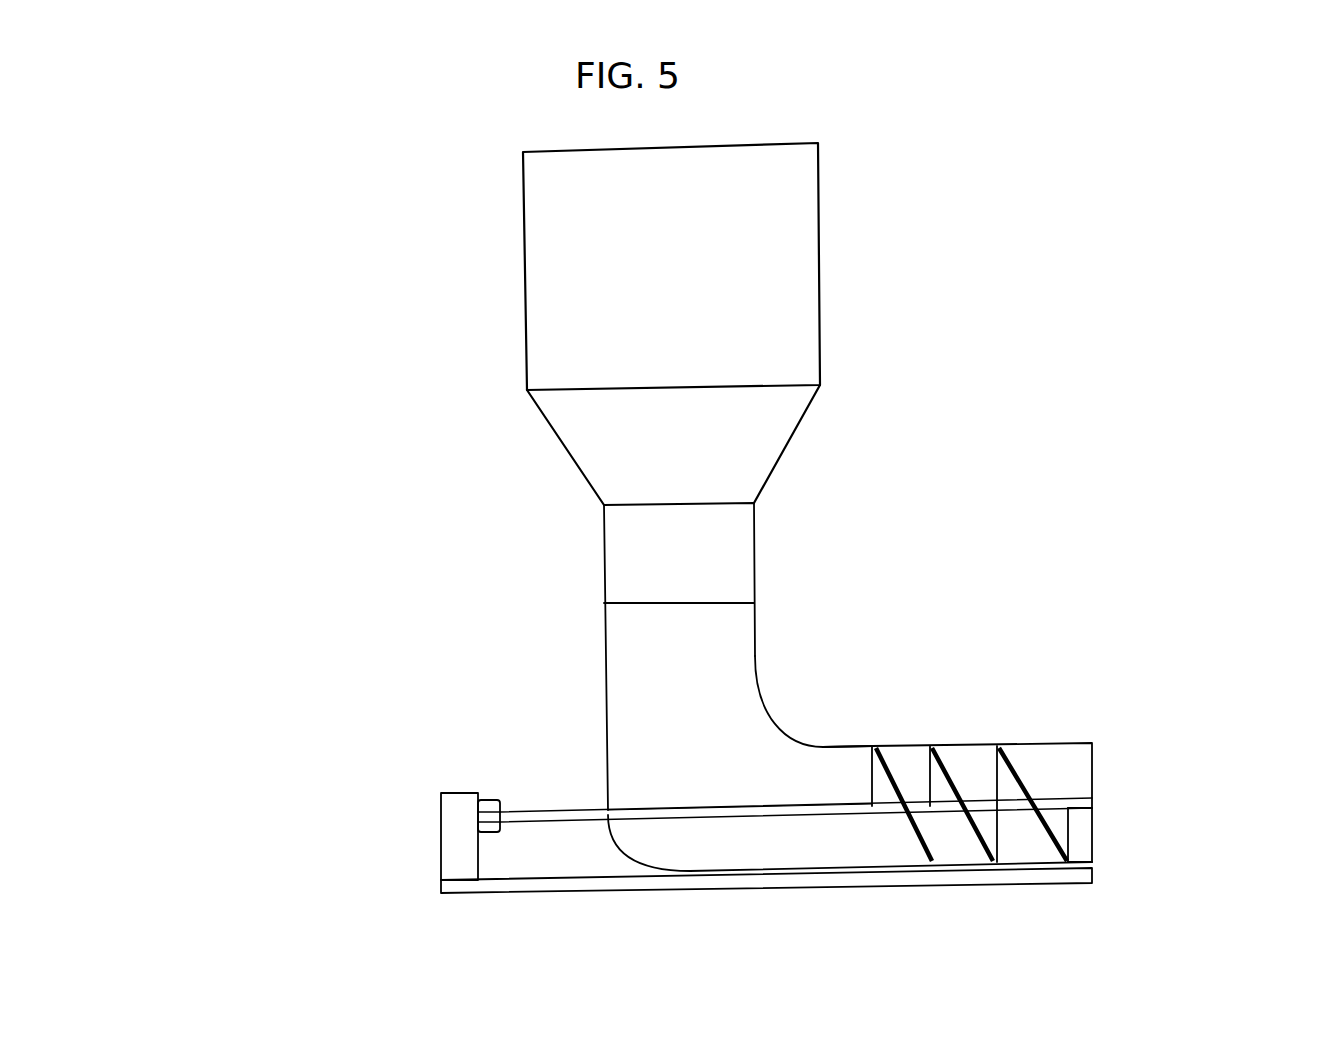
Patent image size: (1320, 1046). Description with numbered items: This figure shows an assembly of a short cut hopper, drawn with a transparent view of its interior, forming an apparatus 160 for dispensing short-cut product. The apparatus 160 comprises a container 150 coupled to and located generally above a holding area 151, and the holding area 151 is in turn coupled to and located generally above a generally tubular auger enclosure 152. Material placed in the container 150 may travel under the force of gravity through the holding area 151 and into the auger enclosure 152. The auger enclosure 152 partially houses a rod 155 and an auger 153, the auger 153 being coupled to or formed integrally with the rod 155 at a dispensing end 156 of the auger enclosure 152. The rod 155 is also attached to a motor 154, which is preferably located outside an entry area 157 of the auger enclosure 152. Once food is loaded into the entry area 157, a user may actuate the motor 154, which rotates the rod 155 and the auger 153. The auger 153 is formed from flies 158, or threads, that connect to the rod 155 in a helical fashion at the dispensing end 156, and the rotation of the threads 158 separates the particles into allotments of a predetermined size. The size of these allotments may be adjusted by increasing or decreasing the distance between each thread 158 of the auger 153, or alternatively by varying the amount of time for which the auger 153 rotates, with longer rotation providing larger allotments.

The apparatus 160 is at (483, 197).
The container 150 is at (772, 327).
The holding area 151 is at (712, 662).
The auger enclosure 152 is at (843, 748).
The auger 153 is at (947, 772).
The motor 154 is at (490, 800).
The rod 155 is at (548, 808).
The dispensing end 156 is at (1070, 782).
The entry area 157 is at (770, 783).
The flies 158 is at (1070, 832).